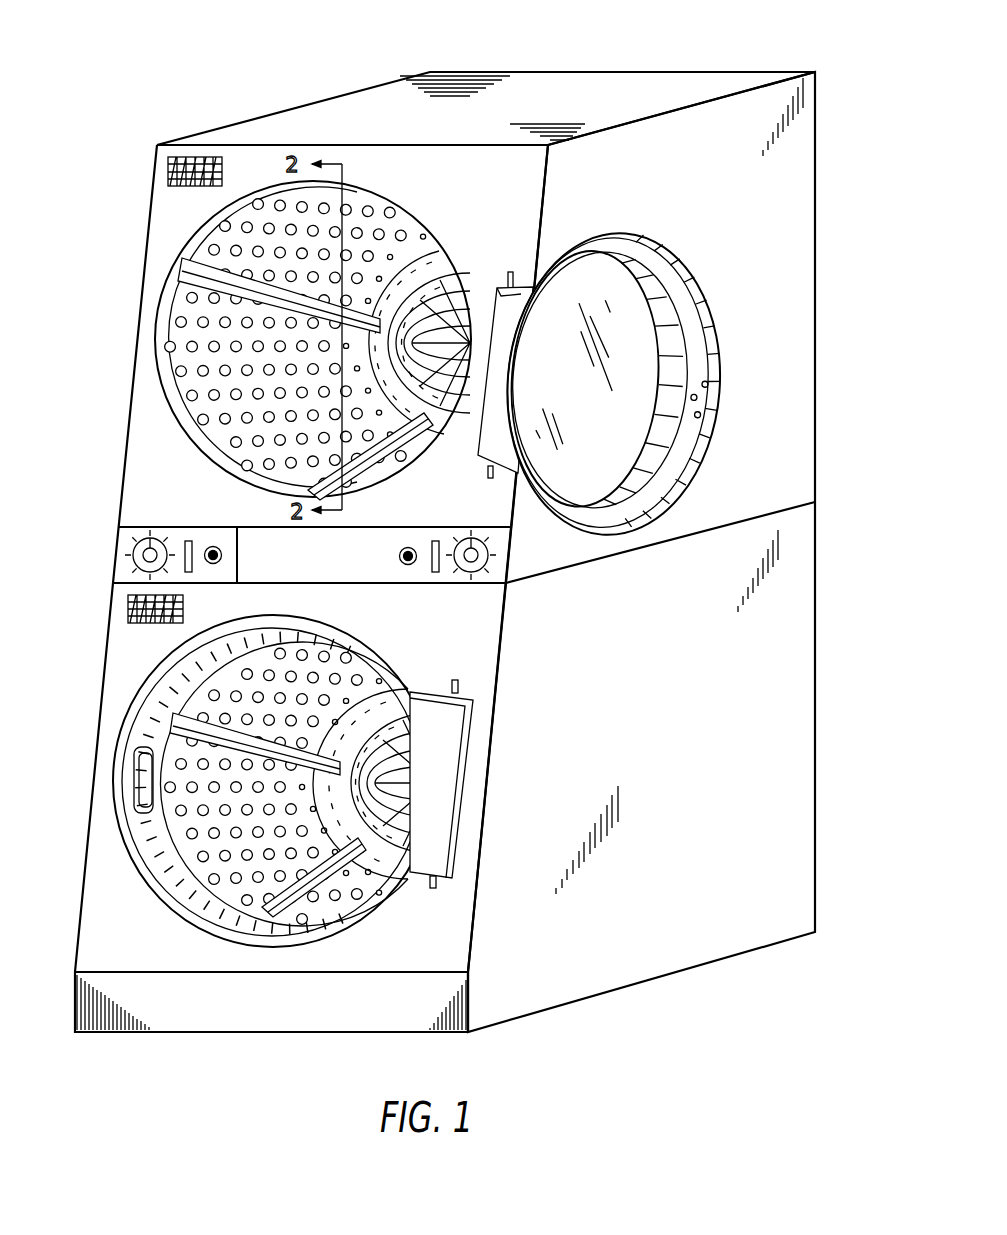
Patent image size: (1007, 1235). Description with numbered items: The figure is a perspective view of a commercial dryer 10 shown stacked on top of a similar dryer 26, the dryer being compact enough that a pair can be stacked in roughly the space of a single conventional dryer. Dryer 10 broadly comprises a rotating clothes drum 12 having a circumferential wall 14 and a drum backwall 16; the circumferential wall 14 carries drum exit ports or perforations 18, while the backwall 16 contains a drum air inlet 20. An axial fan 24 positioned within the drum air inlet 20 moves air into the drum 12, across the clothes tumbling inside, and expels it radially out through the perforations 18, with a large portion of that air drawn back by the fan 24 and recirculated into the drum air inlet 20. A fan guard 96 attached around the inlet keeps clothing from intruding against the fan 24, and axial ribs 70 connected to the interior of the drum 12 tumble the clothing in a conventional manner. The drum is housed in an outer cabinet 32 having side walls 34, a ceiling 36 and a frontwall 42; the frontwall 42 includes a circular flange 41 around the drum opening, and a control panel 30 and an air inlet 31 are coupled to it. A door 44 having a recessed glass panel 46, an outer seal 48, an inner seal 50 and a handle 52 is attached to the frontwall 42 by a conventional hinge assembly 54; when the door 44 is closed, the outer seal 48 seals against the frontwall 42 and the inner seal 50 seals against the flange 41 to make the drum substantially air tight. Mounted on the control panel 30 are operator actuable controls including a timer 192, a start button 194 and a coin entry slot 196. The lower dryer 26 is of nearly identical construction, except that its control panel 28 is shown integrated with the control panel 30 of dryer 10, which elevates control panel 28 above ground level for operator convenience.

The dryer 10 is at (485, 523).
The clothes drum 12 is at (277, 332).
The circumferential wall 14 is at (369, 209).
The drum backwall 16 is at (411, 252).
The perforations 18 is at (190, 345).
The drum air inlet 20 is at (428, 292).
The axial fan 24 is at (476, 395).
The similar dryer 26 is at (828, 690).
The control panel 28 is at (130, 549).
The control panel 30 is at (308, 562).
The air inlet 31 is at (168, 167).
The outer cabinet 32 is at (395, 76).
The side walls 34 is at (800, 178).
The ceiling 36 is at (290, 125).
The circular flange 41 is at (165, 383).
The frontwall 42 is at (319, 364).
The door 44 is at (646, 360).
The recessed glass panel 46 is at (571, 280).
The outer seal 48 is at (716, 350).
The inner seal 50 is at (632, 268).
The handle 52 is at (133, 778).
The hinge assembly 54 is at (493, 300).
The axial ribs 70 is at (393, 453).
The fan guard 96 is at (432, 302).
The timer 192 is at (490, 548).
The start button 194 is at (408, 567).
The coin entry slot 196 is at (435, 574).